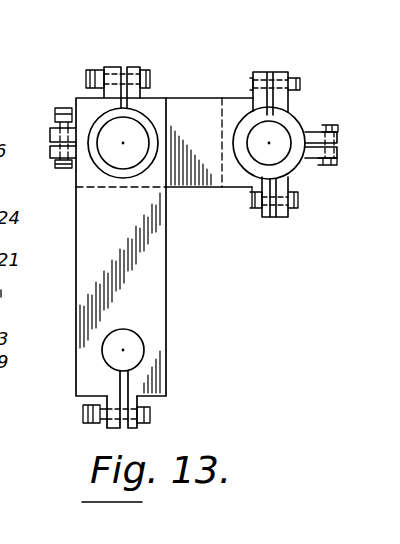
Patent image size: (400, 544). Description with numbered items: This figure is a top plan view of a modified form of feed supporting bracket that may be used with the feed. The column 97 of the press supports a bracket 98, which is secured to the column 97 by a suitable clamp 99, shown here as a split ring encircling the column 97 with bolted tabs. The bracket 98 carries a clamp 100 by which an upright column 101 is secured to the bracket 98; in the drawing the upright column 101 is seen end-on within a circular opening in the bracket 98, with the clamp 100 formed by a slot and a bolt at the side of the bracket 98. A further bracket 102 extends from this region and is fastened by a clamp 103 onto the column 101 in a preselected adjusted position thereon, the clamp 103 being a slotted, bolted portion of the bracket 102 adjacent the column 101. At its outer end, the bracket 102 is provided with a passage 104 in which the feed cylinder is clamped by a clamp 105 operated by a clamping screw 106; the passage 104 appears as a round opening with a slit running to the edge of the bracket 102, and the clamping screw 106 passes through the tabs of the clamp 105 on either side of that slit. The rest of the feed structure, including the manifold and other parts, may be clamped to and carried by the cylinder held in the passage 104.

The column 97 is at (257, 167).
The bracket 98 is at (192, 110).
The clamp 99 is at (296, 115).
The clamp 100 is at (50, 136).
The upright column 101 is at (100, 122).
The bracket 102 is at (148, 287).
The clamp 103 is at (111, 67).
The passage 104 is at (127, 344).
The clamp 105 is at (108, 428).
The clamping screw 106 is at (150, 416).